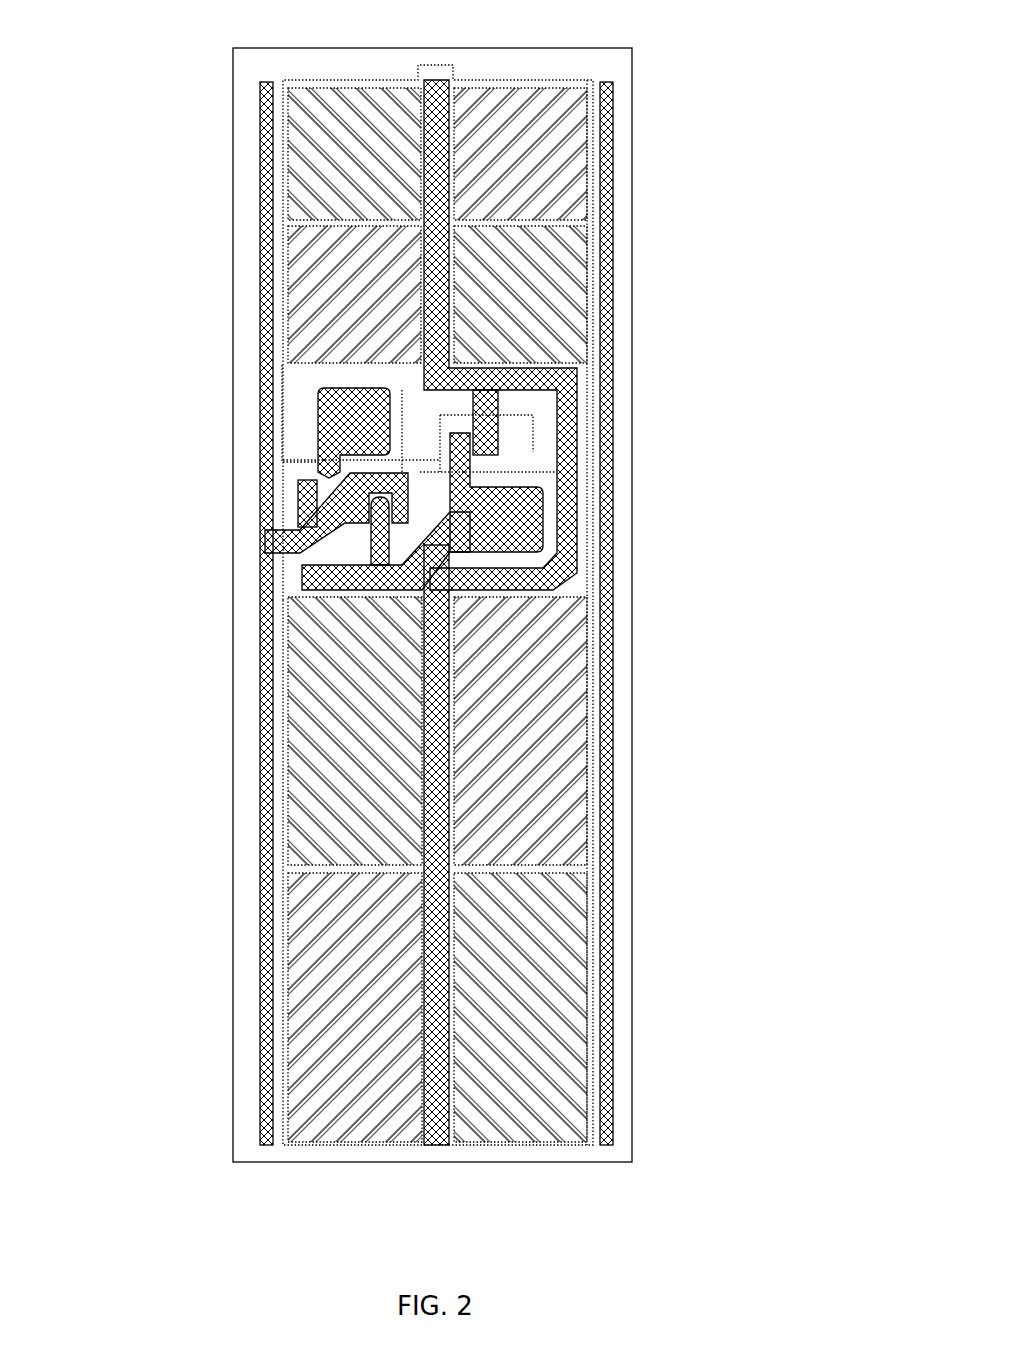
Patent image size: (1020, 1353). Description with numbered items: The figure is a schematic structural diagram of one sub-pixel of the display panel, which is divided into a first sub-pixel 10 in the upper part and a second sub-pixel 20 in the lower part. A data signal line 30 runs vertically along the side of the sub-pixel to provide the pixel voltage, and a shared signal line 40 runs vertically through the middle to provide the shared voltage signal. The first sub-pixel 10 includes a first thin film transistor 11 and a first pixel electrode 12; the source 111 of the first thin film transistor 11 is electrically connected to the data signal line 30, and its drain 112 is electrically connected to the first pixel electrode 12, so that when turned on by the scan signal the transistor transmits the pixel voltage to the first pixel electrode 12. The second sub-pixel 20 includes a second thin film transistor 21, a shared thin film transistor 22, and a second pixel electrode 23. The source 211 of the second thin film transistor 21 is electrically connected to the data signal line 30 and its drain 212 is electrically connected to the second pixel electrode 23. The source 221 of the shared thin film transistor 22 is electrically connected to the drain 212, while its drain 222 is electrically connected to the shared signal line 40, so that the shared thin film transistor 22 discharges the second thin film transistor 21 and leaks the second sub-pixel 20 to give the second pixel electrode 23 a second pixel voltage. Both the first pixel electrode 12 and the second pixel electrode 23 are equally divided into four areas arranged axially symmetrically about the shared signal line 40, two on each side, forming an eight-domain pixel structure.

The first sub-pixel 10 is at (483, 78).
The first thin film transistor 11 is at (221, 429).
The source 111 is at (298, 497).
The drain 112 is at (318, 408).
The first pixel electrode 12 is at (535, 292).
The second sub-pixel 20 is at (517, 1147).
The second thin film transistor 21 is at (260, 554).
The source 211 is at (280, 538).
The drain 212 is at (302, 578).
The shared thin film transistor 22 is at (639, 471).
The source 221 is at (520, 527).
The drain 222 is at (498, 425).
The second pixel electrode 23 is at (535, 760).
The data signal line 30 is at (258, 208).
The shared signal line 40 is at (545, 580).